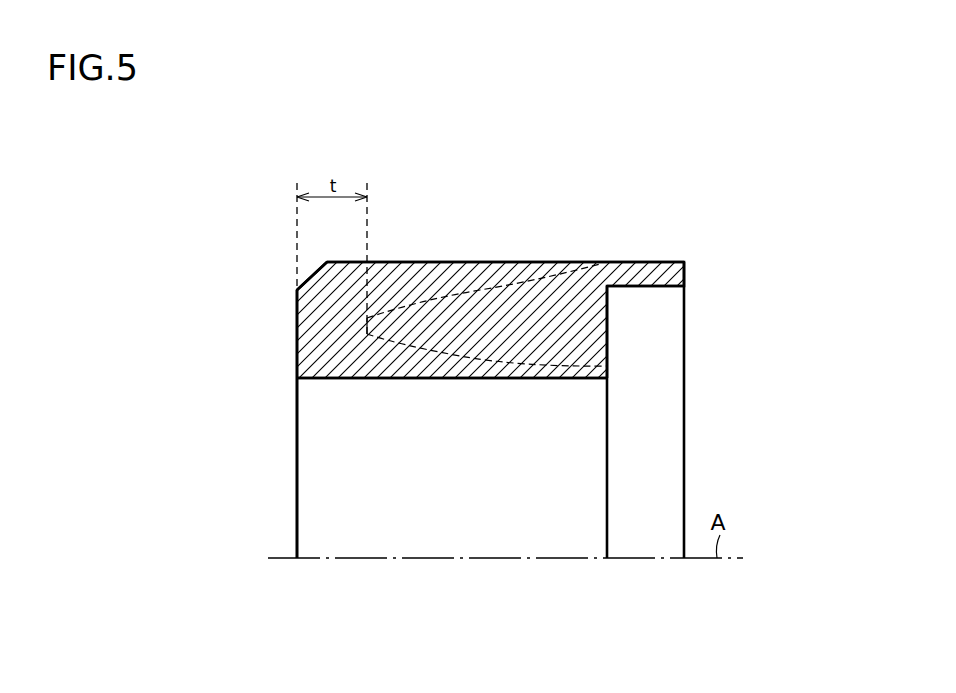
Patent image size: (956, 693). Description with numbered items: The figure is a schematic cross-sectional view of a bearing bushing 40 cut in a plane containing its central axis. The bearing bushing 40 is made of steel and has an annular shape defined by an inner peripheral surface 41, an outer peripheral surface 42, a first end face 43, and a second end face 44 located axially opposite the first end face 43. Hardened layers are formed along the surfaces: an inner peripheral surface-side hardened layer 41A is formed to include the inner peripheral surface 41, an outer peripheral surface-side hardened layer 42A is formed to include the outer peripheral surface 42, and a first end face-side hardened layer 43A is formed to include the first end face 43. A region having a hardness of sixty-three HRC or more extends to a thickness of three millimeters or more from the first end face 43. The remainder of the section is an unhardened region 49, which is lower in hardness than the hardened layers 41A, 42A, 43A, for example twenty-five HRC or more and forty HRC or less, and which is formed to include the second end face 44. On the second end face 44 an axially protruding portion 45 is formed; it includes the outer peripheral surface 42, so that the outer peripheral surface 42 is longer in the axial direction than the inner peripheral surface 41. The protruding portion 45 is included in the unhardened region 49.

The bearing bushing 40 is at (698, 268).
The inner peripheral surface 41 is at (371, 378).
The inner peripheral surface-side hardened layer 41A is at (485, 378).
The outer peripheral surface 42 is at (393, 262).
The outer peripheral surface-side hardened layer 42A is at (511, 268).
The first end face 43 is at (298, 316).
The first end face-side hardened layer 43A is at (318, 340).
The second end face 44 is at (607, 349).
The protruding portion 45 is at (650, 276).
The unhardened region 49 is at (543, 327).